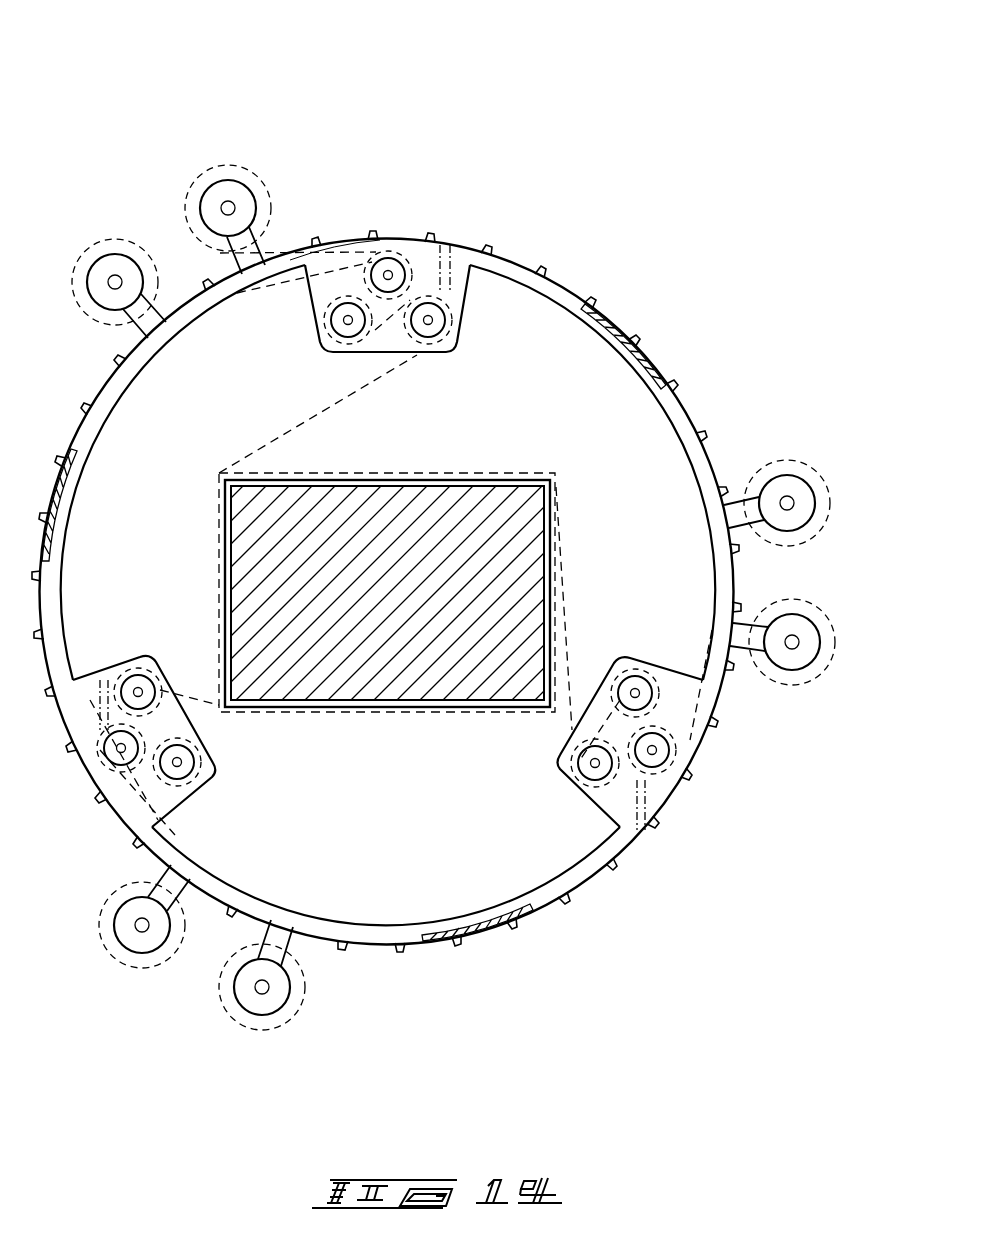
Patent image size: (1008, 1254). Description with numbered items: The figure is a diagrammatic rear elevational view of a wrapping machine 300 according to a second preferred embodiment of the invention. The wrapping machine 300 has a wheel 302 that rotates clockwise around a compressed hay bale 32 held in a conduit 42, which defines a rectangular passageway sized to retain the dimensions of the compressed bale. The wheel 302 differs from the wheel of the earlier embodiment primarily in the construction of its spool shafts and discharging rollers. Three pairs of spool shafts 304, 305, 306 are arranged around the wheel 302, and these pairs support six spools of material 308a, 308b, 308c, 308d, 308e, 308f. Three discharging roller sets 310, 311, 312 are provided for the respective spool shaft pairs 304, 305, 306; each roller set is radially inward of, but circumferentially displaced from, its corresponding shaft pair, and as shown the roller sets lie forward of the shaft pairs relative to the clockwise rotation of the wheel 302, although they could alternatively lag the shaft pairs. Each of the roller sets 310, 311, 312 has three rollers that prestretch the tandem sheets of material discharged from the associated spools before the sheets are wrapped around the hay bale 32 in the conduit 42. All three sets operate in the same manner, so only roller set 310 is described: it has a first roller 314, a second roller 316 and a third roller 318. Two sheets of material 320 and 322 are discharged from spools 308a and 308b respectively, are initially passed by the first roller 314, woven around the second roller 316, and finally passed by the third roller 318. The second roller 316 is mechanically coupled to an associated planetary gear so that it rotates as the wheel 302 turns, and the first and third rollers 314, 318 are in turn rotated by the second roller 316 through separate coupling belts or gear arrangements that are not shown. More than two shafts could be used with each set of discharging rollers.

The wrapping machine 300 is at (668, 222).
The wheel 302 is at (628, 335).
The spool shaft pair 304 is at (126, 132).
The spool shaft pair 305 is at (855, 555).
The spool shaft pair 306 is at (216, 1066).
The spool of material 308a is at (118, 282).
The spool of material 308b is at (230, 208).
The spool of material 308c is at (788, 503).
The spool of material 308d is at (795, 645).
The spool of material 308e is at (265, 990).
The spool of material 308f is at (145, 928).
The discharging roller set 310 is at (456, 358).
The discharging roller set 311 is at (634, 652).
The discharging roller set 312 is at (218, 778).
The first roller 314 is at (389, 274).
The second roller 316 is at (348, 322).
The third roller 318 is at (430, 320).
The sheet of material 320 is at (284, 288).
The sheet of material 322 is at (310, 250).
The compressed hay bale 32 is at (268, 551).
The conduit 42 is at (445, 706).